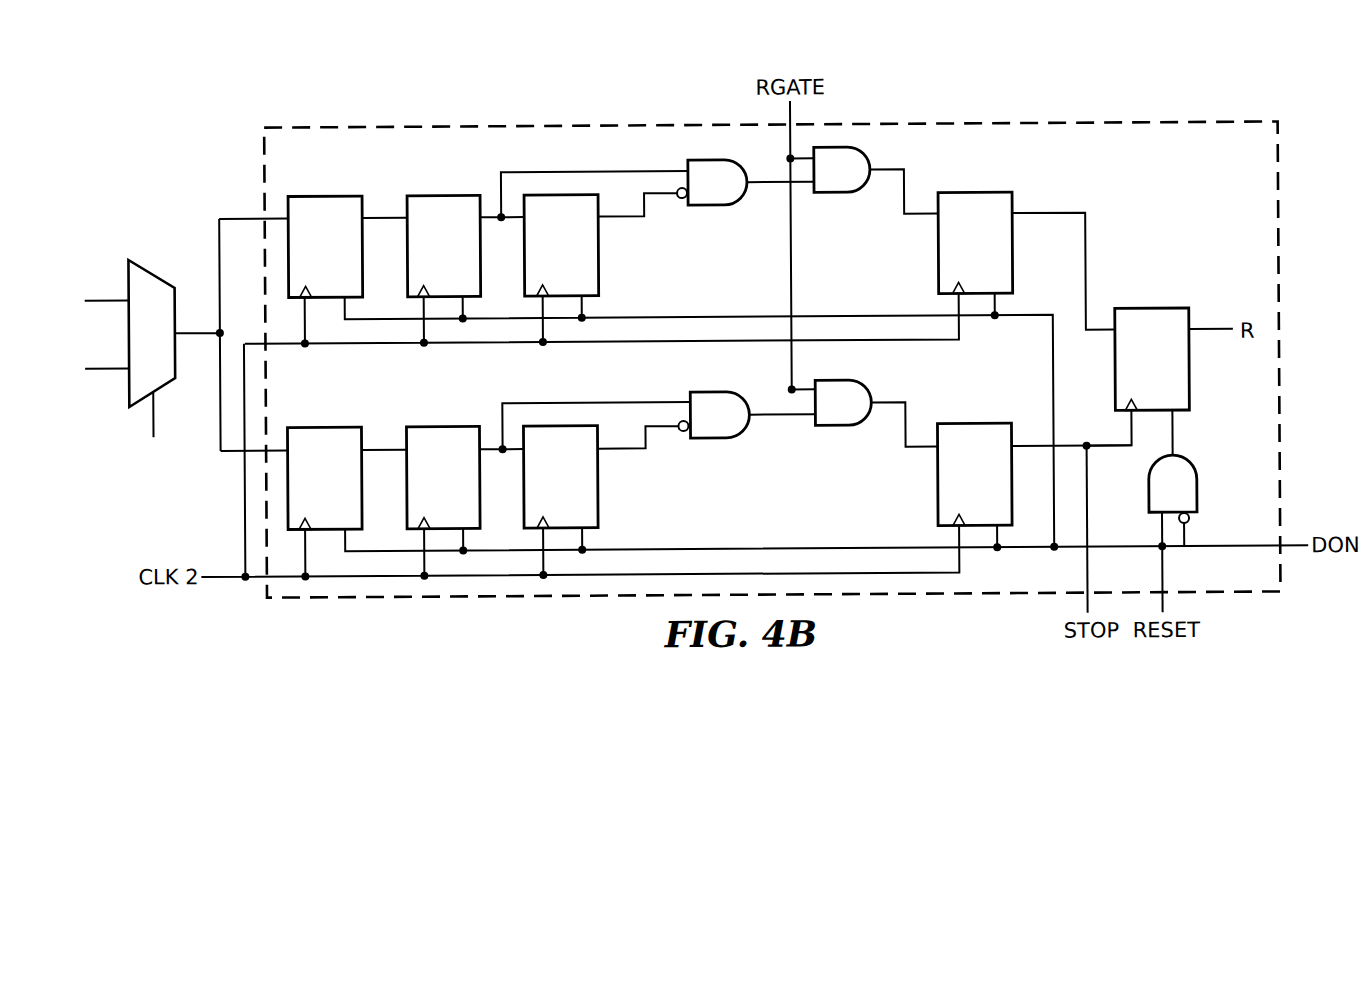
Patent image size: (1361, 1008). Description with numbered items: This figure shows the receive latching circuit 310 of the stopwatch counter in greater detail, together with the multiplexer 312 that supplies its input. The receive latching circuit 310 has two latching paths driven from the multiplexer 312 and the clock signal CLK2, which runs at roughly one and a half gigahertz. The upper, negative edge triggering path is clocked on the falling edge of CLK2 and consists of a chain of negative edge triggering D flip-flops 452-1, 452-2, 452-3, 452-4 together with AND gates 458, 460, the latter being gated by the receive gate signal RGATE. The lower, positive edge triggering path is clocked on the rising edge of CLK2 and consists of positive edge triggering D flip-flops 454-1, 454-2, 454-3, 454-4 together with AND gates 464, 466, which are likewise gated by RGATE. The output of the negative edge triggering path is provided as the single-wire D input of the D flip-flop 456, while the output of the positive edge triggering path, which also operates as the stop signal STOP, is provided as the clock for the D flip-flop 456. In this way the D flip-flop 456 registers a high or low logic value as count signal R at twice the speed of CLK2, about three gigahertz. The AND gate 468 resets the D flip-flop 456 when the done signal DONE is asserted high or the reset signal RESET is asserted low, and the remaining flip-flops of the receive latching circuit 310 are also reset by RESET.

The receive latching circuit 310 is at (1206, 121).
The multiplexer 312 is at (129, 279).
The negative edge triggering D flip-flop 452-1 is at (333, 194).
The negative edge triggering D flip-flop 452-2 is at (452, 194).
The negative edge triggering D flip-flop 452-3 is at (599, 260).
The negative edge triggering D flip-flop 452-4 is at (939, 258).
The positive edge triggering D flip-flop 454-1 is at (333, 425).
The positive edge triggering D flip-flop 454-2 is at (452, 425).
The positive edge triggering D flip-flop 454-3 is at (597, 490).
The positive edge triggering D flip-flop 454-4 is at (937, 490).
The D flip-flop 456 is at (1152, 311).
The AND gate 458 is at (713, 205).
The AND gate 460 is at (838, 193).
The AND gate 464 is at (715, 438).
The AND gate 466 is at (838, 426).
The AND gate 468 is at (1196, 490).